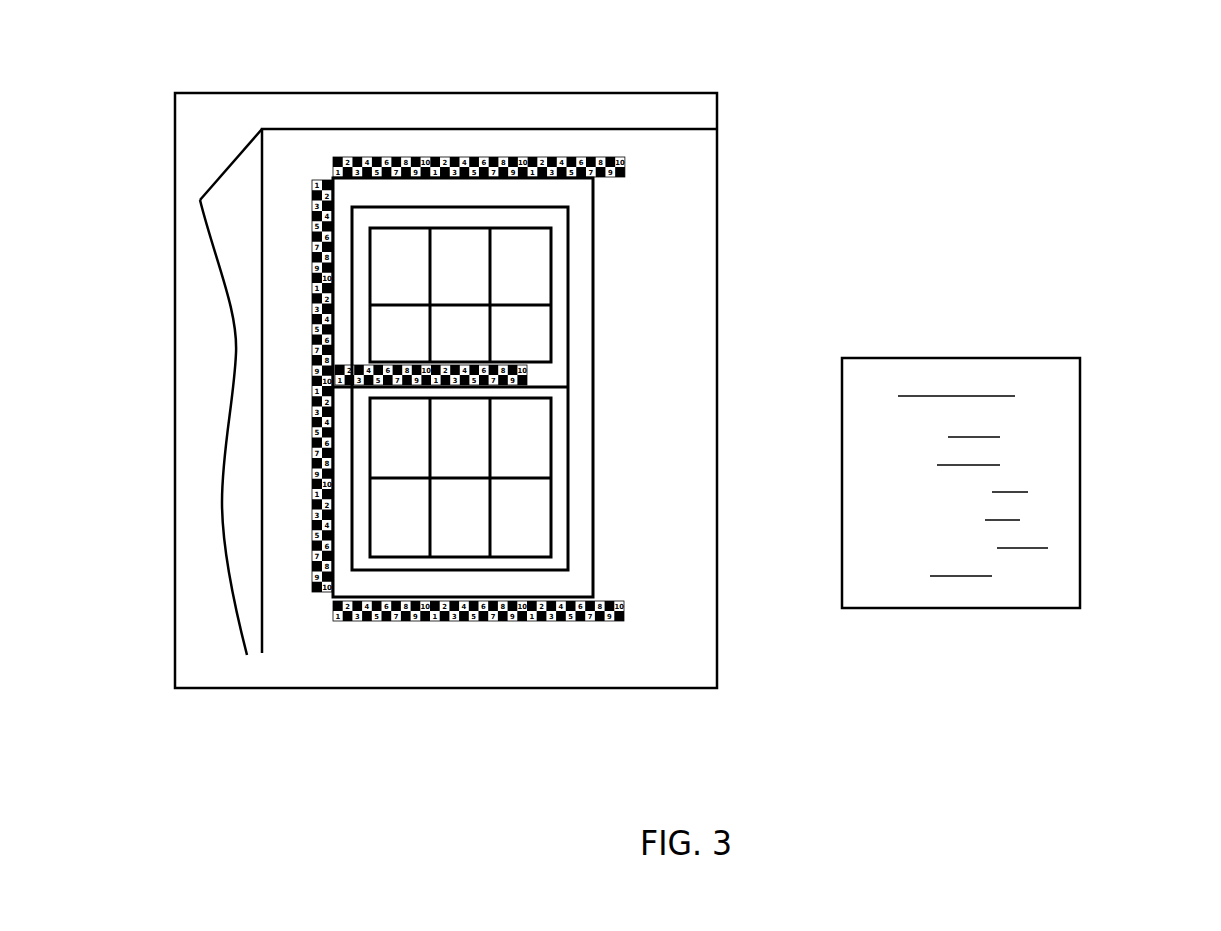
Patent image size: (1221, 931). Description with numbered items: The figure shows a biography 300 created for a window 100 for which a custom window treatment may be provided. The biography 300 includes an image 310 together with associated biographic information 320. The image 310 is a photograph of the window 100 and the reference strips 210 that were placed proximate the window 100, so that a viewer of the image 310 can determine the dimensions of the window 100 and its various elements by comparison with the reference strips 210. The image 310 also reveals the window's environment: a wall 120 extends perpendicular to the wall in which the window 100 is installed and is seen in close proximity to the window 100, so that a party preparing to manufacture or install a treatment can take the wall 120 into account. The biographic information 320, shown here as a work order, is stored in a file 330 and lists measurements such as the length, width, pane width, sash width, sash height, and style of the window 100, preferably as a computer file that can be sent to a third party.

The window 100 is at (614, 290).
The wall 120 is at (242, 190).
The reference strips 210 is at (498, 153).
The biography 300 is at (773, 733).
The image 310 is at (453, 688).
The biographic information 320 is at (1063, 513).
The file 330 is at (982, 608).